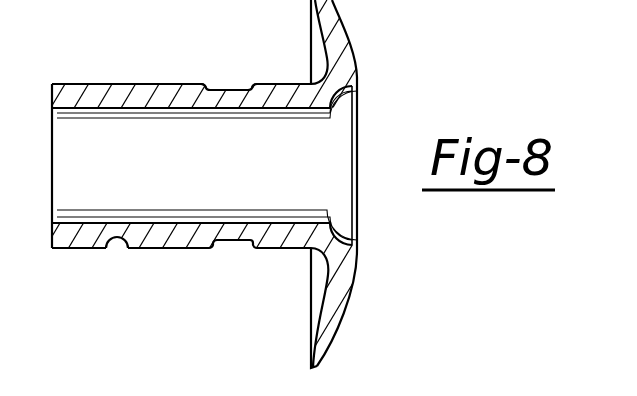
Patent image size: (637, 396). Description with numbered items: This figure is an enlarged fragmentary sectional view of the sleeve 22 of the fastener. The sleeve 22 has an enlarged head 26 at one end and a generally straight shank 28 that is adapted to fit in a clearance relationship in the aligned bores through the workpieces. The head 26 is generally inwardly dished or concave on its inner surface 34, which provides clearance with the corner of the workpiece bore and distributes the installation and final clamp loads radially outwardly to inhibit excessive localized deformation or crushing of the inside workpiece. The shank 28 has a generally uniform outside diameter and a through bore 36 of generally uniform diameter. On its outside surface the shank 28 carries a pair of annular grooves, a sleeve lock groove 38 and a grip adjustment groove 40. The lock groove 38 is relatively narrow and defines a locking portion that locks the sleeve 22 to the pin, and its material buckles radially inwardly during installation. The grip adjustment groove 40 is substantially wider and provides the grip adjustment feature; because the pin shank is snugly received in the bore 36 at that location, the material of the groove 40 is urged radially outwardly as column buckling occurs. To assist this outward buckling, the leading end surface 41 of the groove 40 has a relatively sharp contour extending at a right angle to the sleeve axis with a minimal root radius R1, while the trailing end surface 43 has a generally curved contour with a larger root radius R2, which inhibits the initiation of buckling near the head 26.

The sleeve 22 is at (225, 198).
The enlarged head 26 is at (342, 34).
The shank 28 is at (176, 250).
The inner surface 34 is at (318, 287).
The through bore 36 is at (178, 104).
The sleeve lock groove 38 is at (108, 247).
The grip adjustment groove 40 is at (226, 247).
The leading end surface 41 is at (207, 100).
The trailing end surface 43 is at (257, 100).
The minimal root radius R1 is at (207, 88).
The larger root radius R2 is at (248, 85).